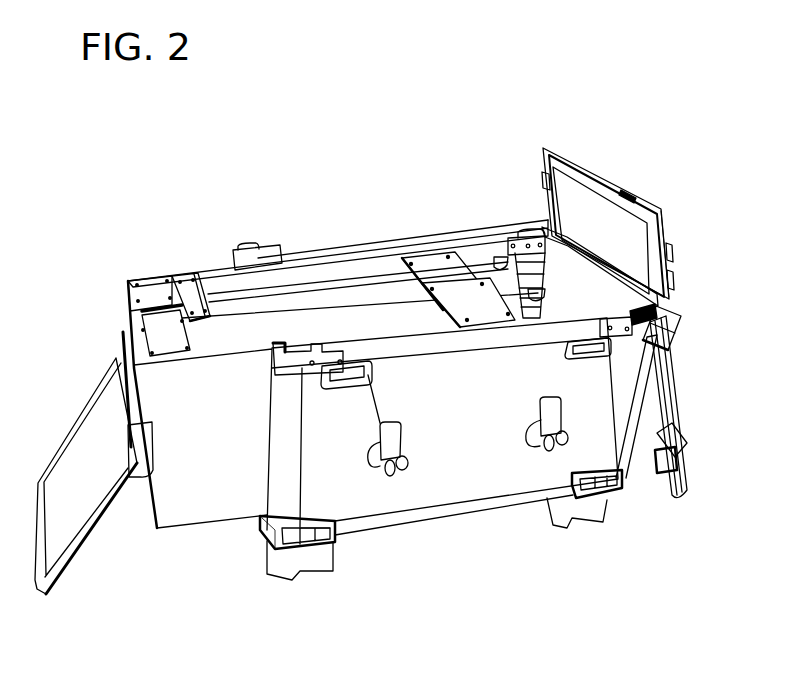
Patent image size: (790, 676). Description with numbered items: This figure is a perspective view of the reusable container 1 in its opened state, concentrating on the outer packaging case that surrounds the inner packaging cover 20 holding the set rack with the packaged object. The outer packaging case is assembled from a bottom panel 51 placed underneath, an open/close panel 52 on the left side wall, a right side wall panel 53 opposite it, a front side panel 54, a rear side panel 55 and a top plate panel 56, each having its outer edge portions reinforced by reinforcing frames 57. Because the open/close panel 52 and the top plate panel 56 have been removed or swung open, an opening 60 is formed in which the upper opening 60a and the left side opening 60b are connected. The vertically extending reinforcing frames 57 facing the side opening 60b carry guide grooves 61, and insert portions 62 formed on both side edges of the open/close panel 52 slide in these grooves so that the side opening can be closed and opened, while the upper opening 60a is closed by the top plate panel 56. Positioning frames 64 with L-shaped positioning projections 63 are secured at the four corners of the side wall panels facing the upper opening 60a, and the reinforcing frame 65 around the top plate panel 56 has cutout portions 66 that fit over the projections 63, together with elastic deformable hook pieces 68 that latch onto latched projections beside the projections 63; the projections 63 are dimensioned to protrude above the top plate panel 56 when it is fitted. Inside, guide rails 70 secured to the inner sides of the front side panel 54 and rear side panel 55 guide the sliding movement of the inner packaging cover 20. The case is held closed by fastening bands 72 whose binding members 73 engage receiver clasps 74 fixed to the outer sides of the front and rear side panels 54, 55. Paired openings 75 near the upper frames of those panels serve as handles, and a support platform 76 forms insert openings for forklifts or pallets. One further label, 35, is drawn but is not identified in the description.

The reusable container 1 is at (374, 218).
The inner packaging cover 20 is at (153, 270).
The partition panel 35 is at (395, 313).
The bottom panel 51 is at (413, 525).
The open/close panel 52 is at (88, 420).
The right side wall panel 53 is at (560, 235).
The front side panel 54 is at (483, 487).
The rear side panel 55 is at (475, 258).
The top plate panel 56 is at (598, 203).
The reinforcing frames 57 is at (421, 240).
The opening 60 is at (422, 598).
The upper opening 60a is at (386, 478).
The side opening 60b is at (338, 543).
The guide grooves 61 is at (230, 268).
The insert portions 62 is at (85, 547).
The L-shaped positioning projections 63 is at (128, 337).
The positioning frames 64 is at (263, 252).
The reinforcing frame 65 is at (678, 387).
The cutout portions 66 is at (667, 233).
The elastic deformable hook pieces 68 is at (670, 257).
The guide rails 70 is at (530, 290).
The fastening bands 72 is at (675, 325).
The binding members 73 is at (672, 310).
The receiver clasps 74 is at (407, 470).
The handle openings 75 is at (630, 447).
The support platform 76 is at (287, 567).